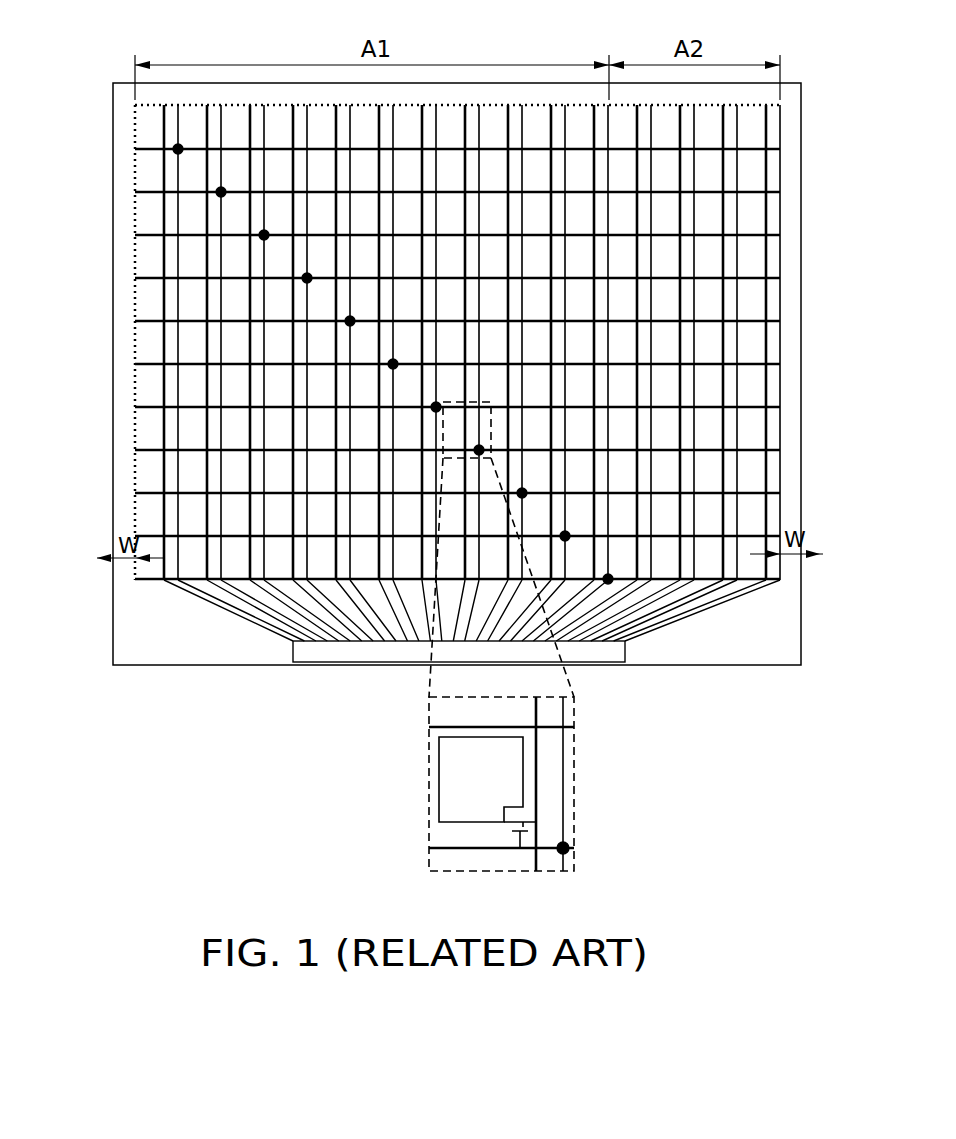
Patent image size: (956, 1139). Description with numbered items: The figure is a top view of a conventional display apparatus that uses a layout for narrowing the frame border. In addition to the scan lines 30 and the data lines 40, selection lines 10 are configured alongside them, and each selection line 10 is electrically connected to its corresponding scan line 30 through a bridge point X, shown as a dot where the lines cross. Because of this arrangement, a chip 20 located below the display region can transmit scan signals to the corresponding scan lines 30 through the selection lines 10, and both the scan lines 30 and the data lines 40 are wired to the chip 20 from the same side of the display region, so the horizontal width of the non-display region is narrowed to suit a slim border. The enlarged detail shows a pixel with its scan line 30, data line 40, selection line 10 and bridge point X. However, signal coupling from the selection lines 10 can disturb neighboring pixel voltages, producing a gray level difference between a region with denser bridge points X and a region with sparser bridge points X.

The selection line 10 is at (177, 245).
The chip 20 is at (358, 653).
The scan line 30 is at (134, 149).
The data line 40 is at (163, 205).
The bridge point X is at (173, 153).